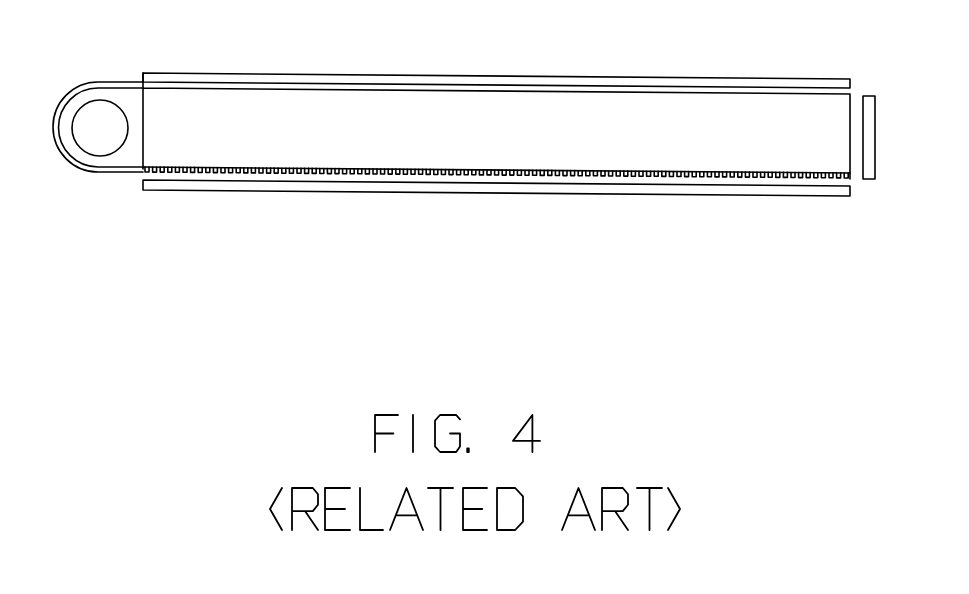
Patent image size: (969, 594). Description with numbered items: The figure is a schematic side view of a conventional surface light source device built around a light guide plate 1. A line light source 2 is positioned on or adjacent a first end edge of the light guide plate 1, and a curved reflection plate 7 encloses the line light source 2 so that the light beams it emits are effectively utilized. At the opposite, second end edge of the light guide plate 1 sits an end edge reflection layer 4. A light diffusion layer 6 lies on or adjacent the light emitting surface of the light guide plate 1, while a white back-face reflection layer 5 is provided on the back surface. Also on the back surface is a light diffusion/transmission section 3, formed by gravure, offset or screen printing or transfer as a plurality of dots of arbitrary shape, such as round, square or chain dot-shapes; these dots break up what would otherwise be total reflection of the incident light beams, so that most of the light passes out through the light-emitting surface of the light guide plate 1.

The light guide plate 1 is at (772, 110).
The line light source 2 is at (90, 117).
The light diffusion/transmission section 3 is at (583, 173).
The end edge reflection layer 4 is at (868, 147).
The white back-face reflection layer 5 is at (653, 188).
The light diffusion layer 6 is at (630, 83).
The curved reflection plate 7 is at (80, 168).